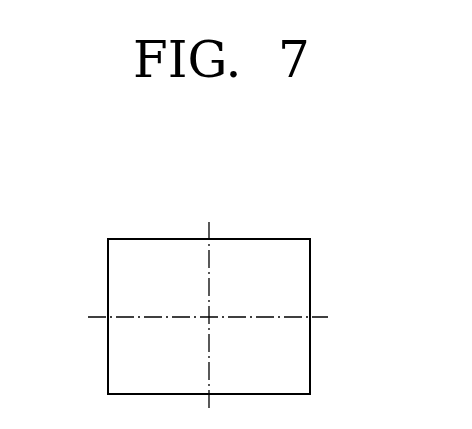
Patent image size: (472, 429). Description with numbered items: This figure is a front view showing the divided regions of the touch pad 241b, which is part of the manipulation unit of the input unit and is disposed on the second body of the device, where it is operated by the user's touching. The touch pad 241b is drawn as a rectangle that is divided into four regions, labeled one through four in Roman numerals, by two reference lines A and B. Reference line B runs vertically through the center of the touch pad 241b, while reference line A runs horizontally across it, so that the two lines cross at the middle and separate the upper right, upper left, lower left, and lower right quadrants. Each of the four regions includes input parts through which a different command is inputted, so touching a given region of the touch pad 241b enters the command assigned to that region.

The touch pad 241b is at (104, 210).
The reference line A is at (316, 317).
The reference line B is at (209, 231).